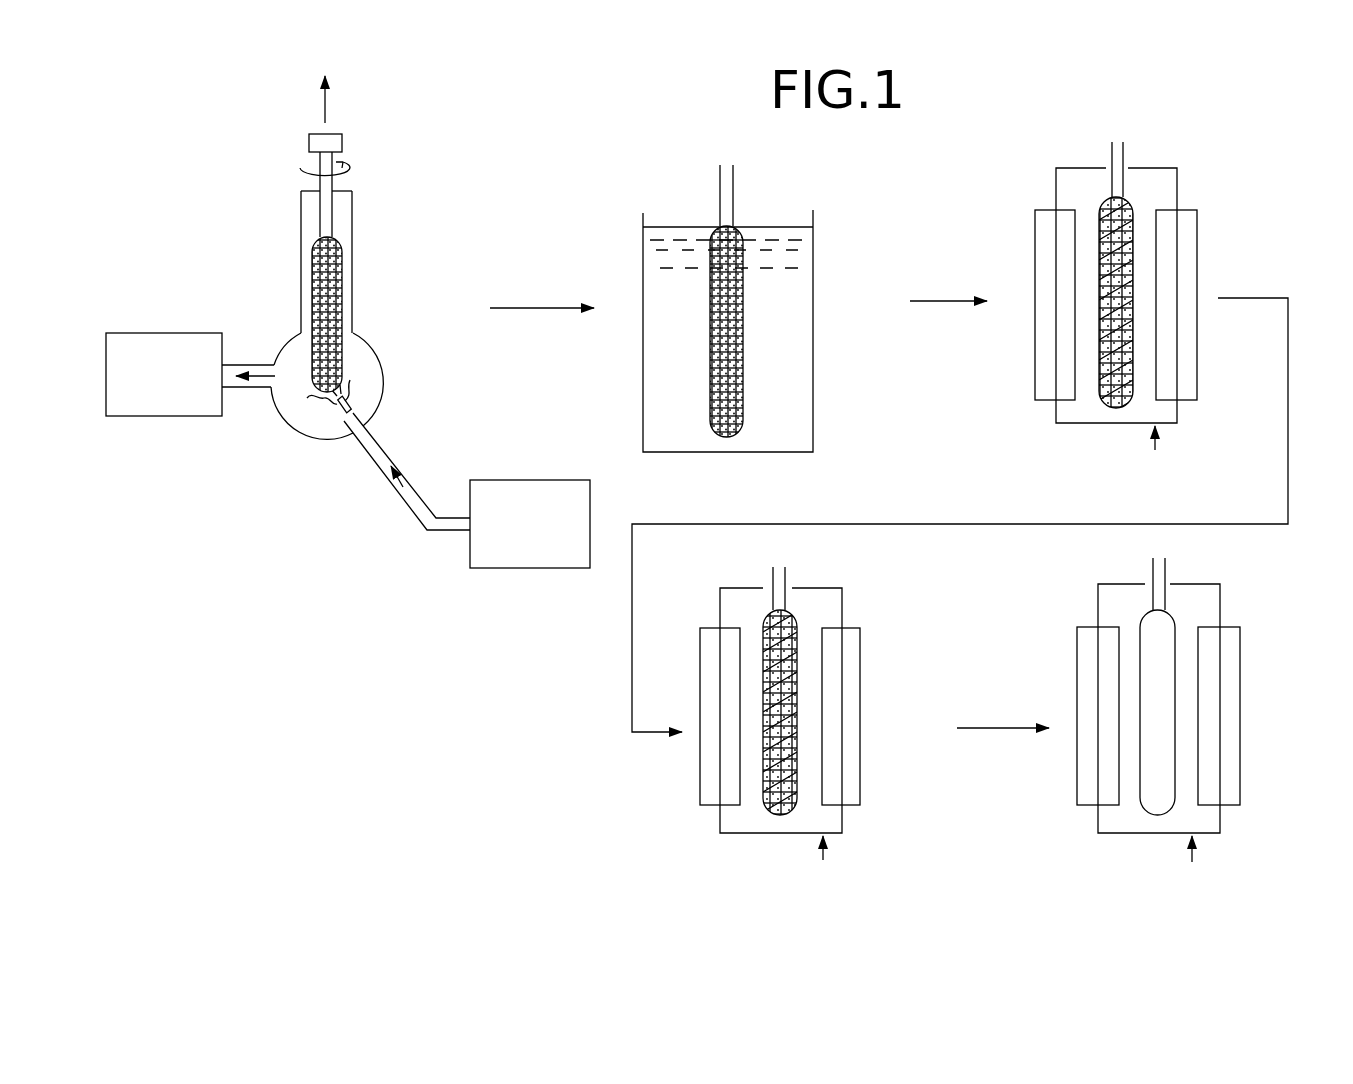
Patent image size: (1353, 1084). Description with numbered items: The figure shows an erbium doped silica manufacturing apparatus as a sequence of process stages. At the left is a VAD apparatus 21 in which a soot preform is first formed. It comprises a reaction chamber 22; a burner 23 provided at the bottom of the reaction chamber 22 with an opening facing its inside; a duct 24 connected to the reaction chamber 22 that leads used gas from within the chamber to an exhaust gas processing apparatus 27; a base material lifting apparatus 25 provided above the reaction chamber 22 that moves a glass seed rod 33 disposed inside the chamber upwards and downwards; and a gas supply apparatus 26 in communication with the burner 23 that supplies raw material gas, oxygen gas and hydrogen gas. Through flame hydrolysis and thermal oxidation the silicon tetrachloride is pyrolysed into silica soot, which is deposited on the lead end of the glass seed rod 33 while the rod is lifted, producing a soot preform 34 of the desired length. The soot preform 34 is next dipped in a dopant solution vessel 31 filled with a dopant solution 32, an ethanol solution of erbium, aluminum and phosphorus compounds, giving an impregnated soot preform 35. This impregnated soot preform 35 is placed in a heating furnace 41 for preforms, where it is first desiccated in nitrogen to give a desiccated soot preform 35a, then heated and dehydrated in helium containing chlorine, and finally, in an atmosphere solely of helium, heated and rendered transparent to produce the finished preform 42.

The VAD apparatus 21 is at (294, 248).
The reaction chamber 22 is at (373, 345).
The burner 23 is at (370, 447).
The duct 24 is at (250, 362).
The base material lifting apparatus 25 is at (365, 126).
The gas supply apparatus 26 is at (540, 478).
The exhaust gas processing apparatus 27 is at (153, 400).
The dopant solution vessel 31 is at (818, 396).
The impregnating solution 32 is at (797, 293).
The glass seed rod 33 is at (341, 216).
The soot preform 34 is at (341, 272).
The impregnated soot preform 35 is at (1133, 270).
The desiccated soot preform 35a is at (897, 699).
The heating furnace 41 is at (1045, 190).
The preform 42 is at (1175, 698).